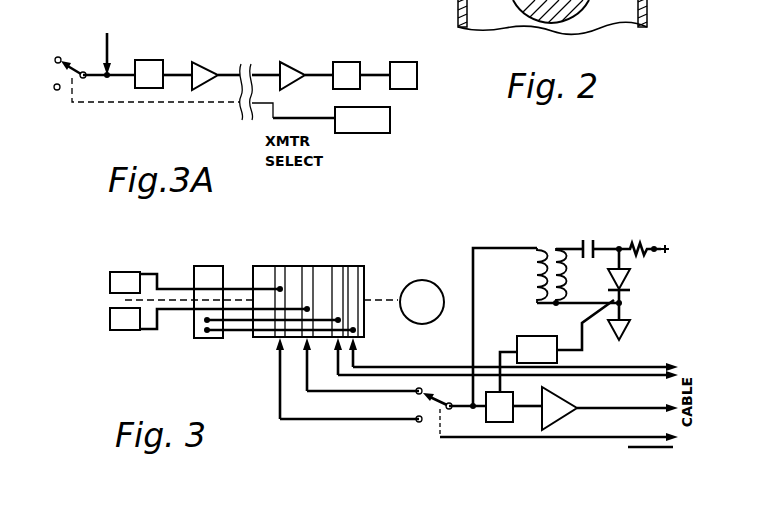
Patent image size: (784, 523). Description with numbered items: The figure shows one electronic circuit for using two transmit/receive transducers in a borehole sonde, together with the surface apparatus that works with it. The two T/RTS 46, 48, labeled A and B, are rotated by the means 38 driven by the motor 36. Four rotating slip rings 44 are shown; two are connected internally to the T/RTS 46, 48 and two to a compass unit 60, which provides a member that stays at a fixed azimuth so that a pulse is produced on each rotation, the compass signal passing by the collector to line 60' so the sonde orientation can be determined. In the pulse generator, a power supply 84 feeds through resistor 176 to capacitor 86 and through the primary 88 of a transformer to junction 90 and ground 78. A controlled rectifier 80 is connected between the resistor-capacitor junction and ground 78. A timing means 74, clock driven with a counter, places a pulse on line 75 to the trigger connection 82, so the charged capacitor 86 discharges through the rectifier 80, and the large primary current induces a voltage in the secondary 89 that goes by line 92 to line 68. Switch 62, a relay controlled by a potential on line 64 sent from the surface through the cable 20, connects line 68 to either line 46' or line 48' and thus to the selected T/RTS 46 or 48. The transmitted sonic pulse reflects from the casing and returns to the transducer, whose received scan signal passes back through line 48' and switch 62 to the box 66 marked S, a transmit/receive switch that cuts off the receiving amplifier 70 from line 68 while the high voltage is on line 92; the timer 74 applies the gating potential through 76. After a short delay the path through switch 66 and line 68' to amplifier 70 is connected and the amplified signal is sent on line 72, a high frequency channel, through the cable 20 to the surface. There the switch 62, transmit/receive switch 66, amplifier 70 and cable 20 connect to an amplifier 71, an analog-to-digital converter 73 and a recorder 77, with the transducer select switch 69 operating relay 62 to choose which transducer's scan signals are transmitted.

In FIG. 3A, the cable 20 is at (233, 70).
In FIG. 3, the cable 20 is at (650, 448).
In FIG. 3, the motor 36 is at (442, 283).
In FIG. 3, the rotating means 38 is at (367, 297).
In FIG. 3, the rotating slip rings 44 is at (355, 266).
In FIG. 3, the T/RTS 46 is at (100, 287).
In FIG. 3, the T/RTS 48 is at (100, 321).
In FIG. 3, the line 46' is at (349, 395).
In FIG. 3, the line 48' is at (362, 394).
In FIG. 3, the compass unit 60 is at (199, 304).
In FIG. 3, the line 60' is at (506, 358).
In FIG. 3A, the switch 62 is at (72, 57).
In FIG. 3, the switch 62 is at (436, 436).
In FIG. 3, the line 64 is at (462, 439).
In FIG. 3A, the transmit/receive switch 66 is at (162, 65).
In FIG. 3, the transmit/receive switch 66 is at (505, 423).
In FIG. 3, the line 68 is at (454, 380).
In FIG. 3, the line 68' is at (542, 444).
In FIG. 3A, the transducer select switch 69 is at (385, 118).
In FIG. 3A, the receiving amplifier 70 is at (208, 63).
In FIG. 3, the receiving amplifier 70 is at (565, 410).
In FIG. 3A, the amplifier 71 is at (298, 64).
In FIG. 3, the line 72 is at (600, 409).
In FIG. 3A, the analog-to-digital converter 73 is at (356, 67).
In FIG. 3, the timing means 74 is at (530, 338).
In FIG. 3, the line 75 is at (677, 357).
In FIG. 3, the line 76 is at (498, 370).
In FIG. 3A, the recorder 77 is at (410, 72).
In FIG. 3, the ground 78 is at (631, 329).
In FIG. 3, the controlled rectifier 80 is at (636, 279).
In FIG. 3, the trigger connection 82 is at (622, 302).
In FIG. 3, the power supply 84 is at (661, 246).
In FIG. 3, the capacitor 86 is at (595, 243).
In FIG. 3, the primary 88 is at (557, 248).
In FIG. 3, the secondary 89 is at (534, 250).
In FIG. 3, the junction 90 is at (558, 302).
In FIG. 3, the line 92 is at (473, 250).
In FIG. 3, the resistor 176 is at (639, 243).